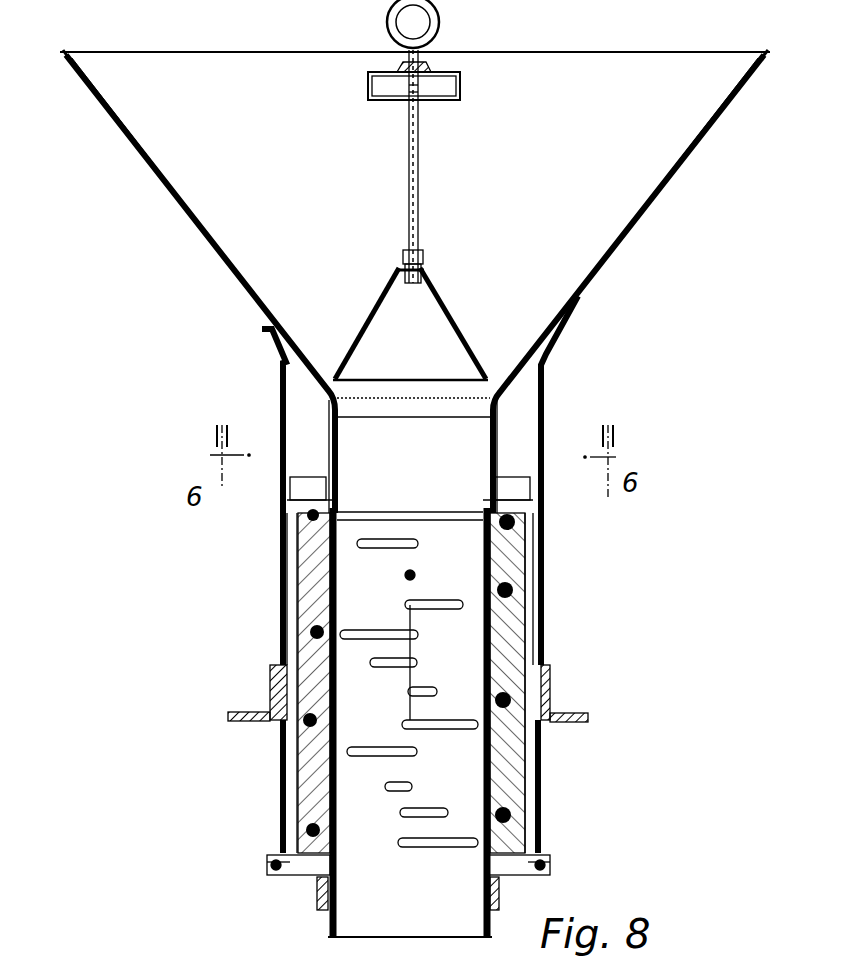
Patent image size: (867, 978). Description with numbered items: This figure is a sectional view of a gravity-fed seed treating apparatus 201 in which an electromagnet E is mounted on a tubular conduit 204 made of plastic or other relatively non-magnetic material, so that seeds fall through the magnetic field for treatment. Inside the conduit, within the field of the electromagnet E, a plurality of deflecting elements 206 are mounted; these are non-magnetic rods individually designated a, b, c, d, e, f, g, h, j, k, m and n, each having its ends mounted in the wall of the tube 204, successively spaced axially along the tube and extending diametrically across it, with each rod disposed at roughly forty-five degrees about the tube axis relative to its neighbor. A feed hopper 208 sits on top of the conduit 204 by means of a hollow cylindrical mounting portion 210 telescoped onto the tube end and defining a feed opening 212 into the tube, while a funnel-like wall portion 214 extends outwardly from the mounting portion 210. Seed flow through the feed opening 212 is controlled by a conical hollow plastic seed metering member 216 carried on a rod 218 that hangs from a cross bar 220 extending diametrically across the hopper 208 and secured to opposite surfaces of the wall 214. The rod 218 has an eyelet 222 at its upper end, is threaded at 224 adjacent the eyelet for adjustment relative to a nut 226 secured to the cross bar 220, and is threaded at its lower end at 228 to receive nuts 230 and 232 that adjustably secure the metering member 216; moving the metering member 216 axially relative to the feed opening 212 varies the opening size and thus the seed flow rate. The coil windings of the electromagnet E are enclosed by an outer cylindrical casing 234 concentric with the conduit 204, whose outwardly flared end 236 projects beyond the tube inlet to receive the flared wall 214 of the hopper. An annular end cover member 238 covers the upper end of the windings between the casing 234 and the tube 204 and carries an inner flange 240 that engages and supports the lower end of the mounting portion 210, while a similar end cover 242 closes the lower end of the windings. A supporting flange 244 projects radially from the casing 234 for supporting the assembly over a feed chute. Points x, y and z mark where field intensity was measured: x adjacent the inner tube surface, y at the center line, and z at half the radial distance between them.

The apparatus 201 is at (607, 412).
The tubular conduit 204 is at (325, 918).
The deflecting elements 206 is at (366, 510).
The feed hopper 208 is at (660, 199).
The mounting portion 210 is at (497, 432).
The feed opening 212 is at (497, 393).
The wall portion 214 is at (702, 142).
The seed metering member 216 is at (470, 340).
The rod 218 is at (419, 178).
The cross bar 220 is at (460, 92).
The eyelet 222 is at (440, 22).
The threaded portion 224 is at (418, 96).
The nut 226 is at (431, 66).
The threaded lower end 228 is at (421, 240).
The nut 230 is at (421, 260).
The nut 232 is at (400, 268).
The outer cylindrical casing 234 is at (541, 606).
The casing end 236 is at (266, 334).
The annular end cover member 238 is at (490, 492).
The inner flange 240 is at (343, 472).
The end cover 242 is at (518, 868).
The supporting flange 244 is at (577, 722).
The electromagnet E is at (508, 646).
The rod a is at (420, 527).
The rod b is at (390, 548).
The rod c is at (416, 575).
The rod d is at (450, 609).
The rod e is at (372, 635).
The rod f is at (370, 660).
The rod g is at (437, 691).
The rod h is at (445, 729).
The rod j is at (365, 756).
The rod k is at (412, 786).
The rod m is at (400, 813).
The rod n is at (448, 847).
The point x is at (345, 685).
The point y is at (372, 685).
The point z is at (412, 680).